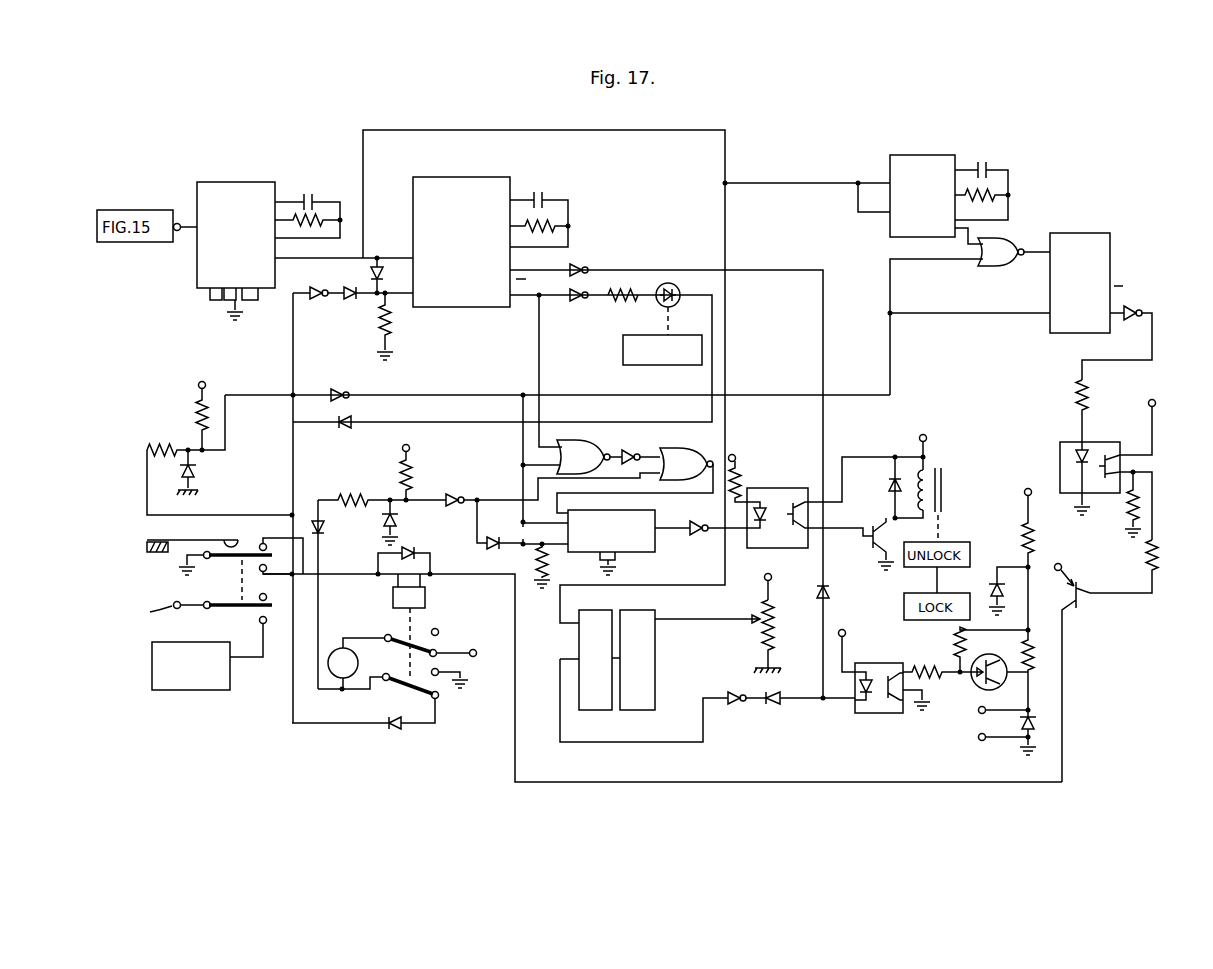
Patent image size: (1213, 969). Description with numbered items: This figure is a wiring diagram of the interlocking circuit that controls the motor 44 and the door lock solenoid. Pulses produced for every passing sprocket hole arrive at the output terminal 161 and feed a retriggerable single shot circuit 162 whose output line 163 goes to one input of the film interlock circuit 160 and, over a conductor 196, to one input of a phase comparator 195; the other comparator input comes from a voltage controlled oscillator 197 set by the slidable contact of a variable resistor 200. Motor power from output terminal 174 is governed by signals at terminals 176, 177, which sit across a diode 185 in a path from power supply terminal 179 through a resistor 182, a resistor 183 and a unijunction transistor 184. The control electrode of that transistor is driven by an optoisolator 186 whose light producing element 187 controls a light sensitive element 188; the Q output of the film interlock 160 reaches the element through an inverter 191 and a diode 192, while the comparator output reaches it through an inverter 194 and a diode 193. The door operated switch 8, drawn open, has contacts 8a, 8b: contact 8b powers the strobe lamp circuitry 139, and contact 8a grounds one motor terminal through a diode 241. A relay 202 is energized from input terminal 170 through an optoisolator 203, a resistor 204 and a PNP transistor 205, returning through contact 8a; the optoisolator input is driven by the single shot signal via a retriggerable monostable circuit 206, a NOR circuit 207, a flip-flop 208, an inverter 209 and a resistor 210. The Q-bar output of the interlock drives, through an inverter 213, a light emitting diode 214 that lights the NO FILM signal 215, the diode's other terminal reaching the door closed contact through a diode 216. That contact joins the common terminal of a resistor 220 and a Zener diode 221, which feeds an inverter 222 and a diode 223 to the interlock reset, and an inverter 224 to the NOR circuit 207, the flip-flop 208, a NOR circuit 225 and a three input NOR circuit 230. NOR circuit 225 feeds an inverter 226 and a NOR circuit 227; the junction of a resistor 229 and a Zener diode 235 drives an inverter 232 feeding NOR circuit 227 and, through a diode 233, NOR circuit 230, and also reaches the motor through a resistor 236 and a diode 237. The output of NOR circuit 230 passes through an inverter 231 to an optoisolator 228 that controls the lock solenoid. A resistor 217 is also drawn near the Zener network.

The retriggerable single shot circuit 162 is at (216, 182).
The output terminal 161 is at (176, 233).
The output line 163 is at (297, 260).
The inverter 222 is at (318, 310).
The diode 223 is at (378, 323).
The inverter 224 is at (336, 386).
The film interlock circuit 160 is at (458, 177).
The inverter 191 is at (580, 264).
The inverter 213 is at (576, 302).
The light emitting diode 214 is at (680, 290).
The conductor 196 is at (725, 218).
The signal 215 is at (640, 366).
The retriggerable monostable circuit 206 is at (912, 155).
The NOR circuit 207 is at (1000, 267).
The flip-flop 208 is at (1072, 240).
The inverter 209 is at (1136, 305).
The resistor 210 is at (1074, 398).
The power supply terminal 179 is at (736, 455).
The input terminal 170 is at (410, 446).
The resistor 220 is at (192, 410).
The resistor 217 is at (148, 446).
The Zener diode 221 is at (198, 474).
The diode 216 is at (345, 430).
The resistor 229 is at (412, 478).
The resistor 236 is at (348, 490).
The inverter 232 is at (458, 492).
The Zener diode 235 is at (400, 523).
The diode 237 is at (326, 524).
The diode 233 is at (490, 550).
The relay 202 is at (384, 596).
The door operated switch 8 is at (192, 537).
The switch contact 8a is at (213, 562).
The switch contact 8b is at (232, 610).
The strobe lamp circuitry 139 is at (170, 690).
The motor 44 is at (334, 640).
The output terminal 174 is at (476, 650).
The diode 241 is at (396, 730).
The NOR circuit 225 is at (582, 440).
The inverter 226 is at (628, 450).
The NOR circuit 227 is at (684, 448).
The NOR circuit 230 is at (640, 552).
The inverter 231 is at (690, 506).
The optoisolator 228 is at (752, 548).
The diode 192 is at (830, 590).
The variable resistor 200 is at (776, 628).
The phase comparator 195 is at (577, 650).
The voltage controlled oscillator 197 is at (632, 710).
The inverter 194 is at (734, 706).
The diode 193 is at (774, 706).
The optoisolator 186 is at (870, 713).
The light producing element 187 is at (862, 688).
The light sensitive element 188 is at (892, 700).
The unijunction transistor 184 is at (1004, 677).
The terminal 176 is at (978, 712).
The terminal 177 is at (978, 739).
The resistor 182 is at (1024, 535).
The resistor 183 is at (1036, 648).
The diode 185 is at (1036, 723).
The optoisolator 203 is at (1102, 493).
The resistor 204 is at (1158, 552).
The PNP transistor 205 is at (1086, 604).